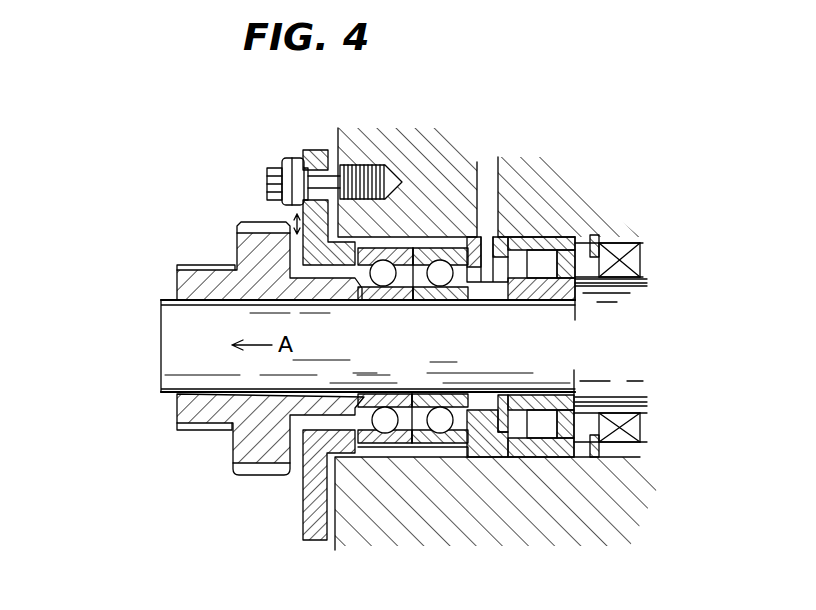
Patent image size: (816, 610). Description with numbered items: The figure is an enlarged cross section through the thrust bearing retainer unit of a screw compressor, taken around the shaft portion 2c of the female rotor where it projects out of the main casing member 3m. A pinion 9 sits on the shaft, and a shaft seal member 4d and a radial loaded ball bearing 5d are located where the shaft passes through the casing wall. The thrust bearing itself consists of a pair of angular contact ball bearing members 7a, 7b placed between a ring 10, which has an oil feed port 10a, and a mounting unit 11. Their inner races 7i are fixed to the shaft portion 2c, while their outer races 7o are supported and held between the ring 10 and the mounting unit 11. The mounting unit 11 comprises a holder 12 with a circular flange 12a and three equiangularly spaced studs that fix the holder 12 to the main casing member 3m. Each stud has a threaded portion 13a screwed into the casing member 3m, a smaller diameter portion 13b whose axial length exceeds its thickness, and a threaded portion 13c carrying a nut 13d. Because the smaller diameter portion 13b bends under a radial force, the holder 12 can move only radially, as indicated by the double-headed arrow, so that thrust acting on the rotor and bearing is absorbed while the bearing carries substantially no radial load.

The shaft portion 2c is at (163, 372).
The pinion 9 is at (233, 452).
The holder 12 is at (317, 150).
The circular flange 12a is at (310, 252).
The screw or thread portion 13a is at (358, 163).
The smaller diameter portion 13b is at (322, 180).
The screw or threaded portion 13c is at (267, 188).
The nut 13d is at (293, 157).
The mounting unit 11 is at (340, 247).
The outer races 7o is at (402, 256).
The inner races 7i is at (420, 394).
The angular contact ball bearing member 7a is at (436, 426).
The angular contact ball bearing member 7b is at (406, 423).
The ring 10 is at (505, 237).
The oil feed port 10a is at (503, 265).
The radial loaded ball bearing 5d is at (543, 438).
The shaft seal member 4d is at (623, 450).
The main casing member 3m is at (485, 512).